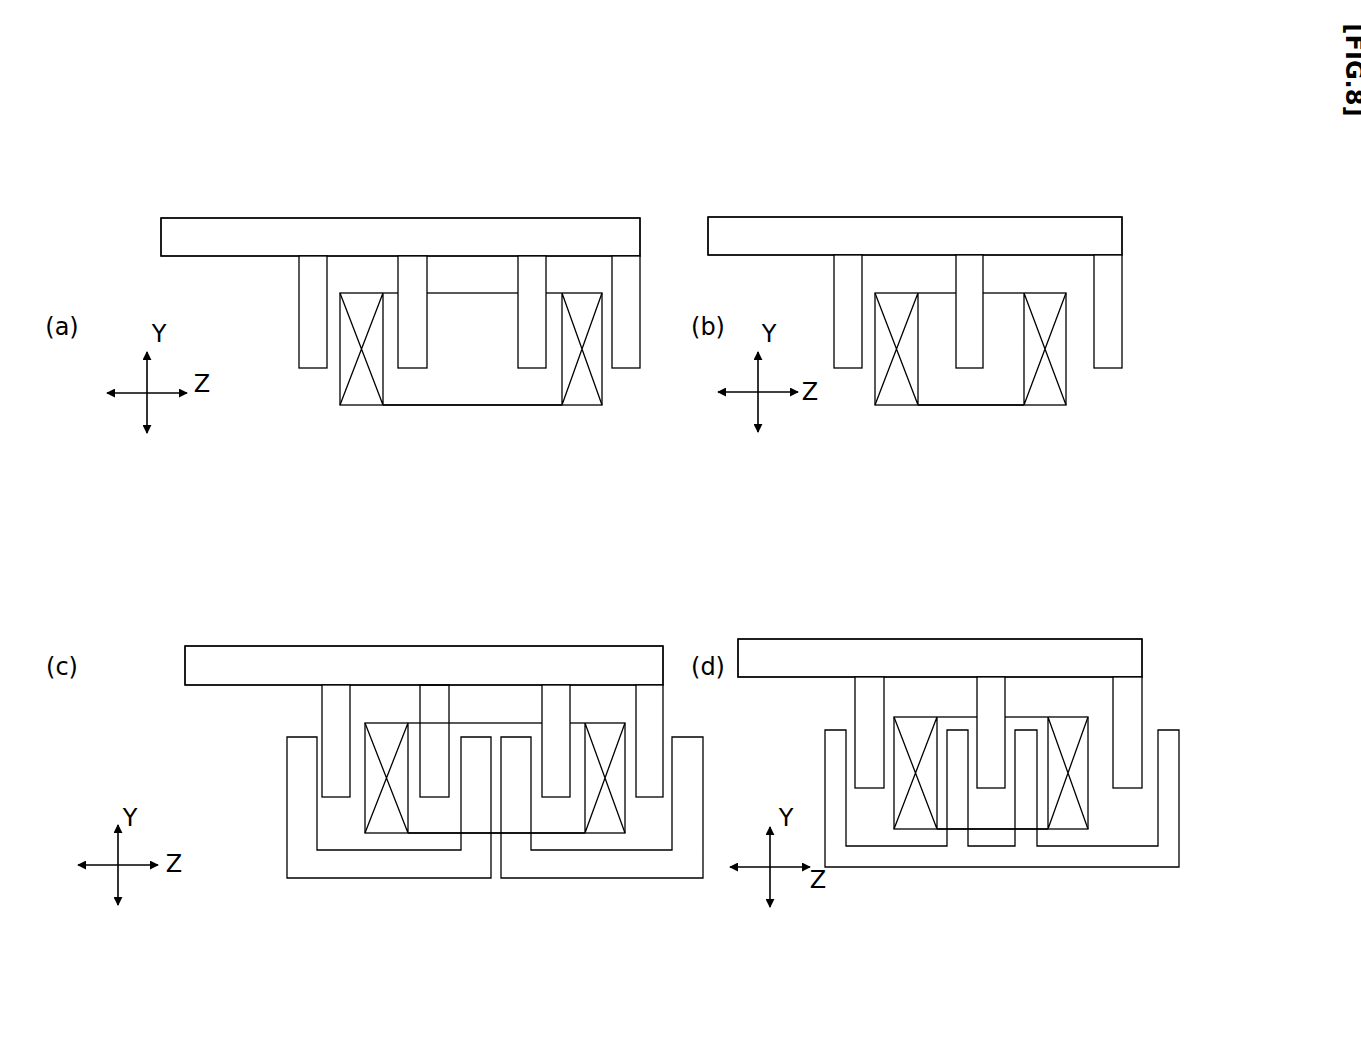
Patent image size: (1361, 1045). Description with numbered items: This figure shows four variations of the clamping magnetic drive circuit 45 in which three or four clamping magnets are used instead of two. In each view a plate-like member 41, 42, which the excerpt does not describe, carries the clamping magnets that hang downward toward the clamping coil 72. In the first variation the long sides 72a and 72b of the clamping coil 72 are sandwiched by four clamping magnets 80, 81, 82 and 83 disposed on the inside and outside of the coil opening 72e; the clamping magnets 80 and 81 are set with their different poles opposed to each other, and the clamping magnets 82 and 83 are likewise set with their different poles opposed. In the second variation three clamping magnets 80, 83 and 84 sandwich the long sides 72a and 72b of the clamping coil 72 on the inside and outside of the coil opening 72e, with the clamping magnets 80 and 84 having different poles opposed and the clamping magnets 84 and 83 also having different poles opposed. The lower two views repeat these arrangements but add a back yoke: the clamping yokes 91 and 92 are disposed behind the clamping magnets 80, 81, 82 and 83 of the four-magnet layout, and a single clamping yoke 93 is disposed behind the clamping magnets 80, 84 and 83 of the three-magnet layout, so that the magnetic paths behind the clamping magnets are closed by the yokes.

The first magnetic pole member (yoke) 41 is at (208, 233).
The second magnetic pole member (yoke) 42 is at (651, 451).
The clamping magnetic drive circuit 45 is at (563, 167).
The clamping coil 72 is at (565, 390).
The long side of the clamping coil 72a is at (352, 388).
The long side of the clamping coil 72b is at (586, 393).
The coil opening 72e is at (459, 370).
The clamping magnet 80 is at (302, 278).
The clamping magnet 81 is at (398, 275).
The clamping magnet 82 is at (518, 278).
The clamping magnet 83 is at (620, 270).
The clamping magnet 84 is at (985, 268).
The clamping yoke 91 is at (308, 865).
The clamping yoke 92 is at (528, 862).
The clamping yoke 93 is at (1170, 830).